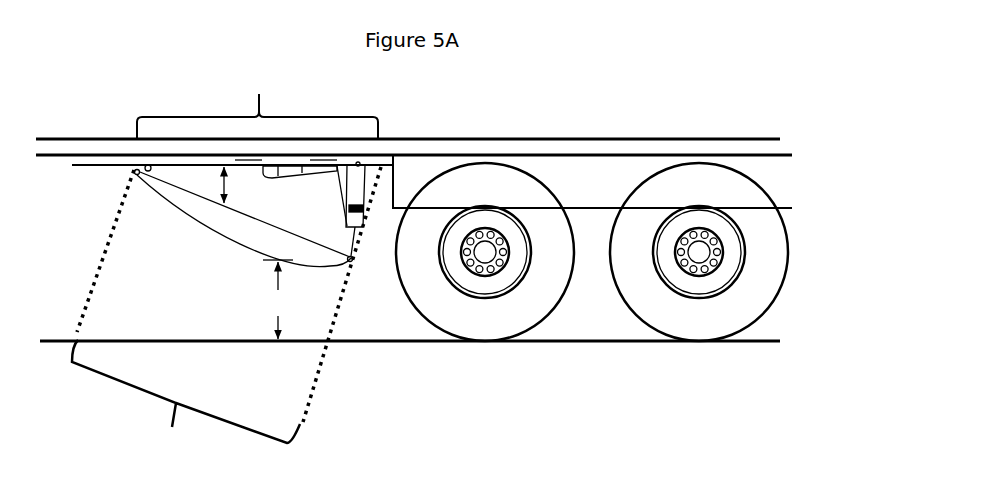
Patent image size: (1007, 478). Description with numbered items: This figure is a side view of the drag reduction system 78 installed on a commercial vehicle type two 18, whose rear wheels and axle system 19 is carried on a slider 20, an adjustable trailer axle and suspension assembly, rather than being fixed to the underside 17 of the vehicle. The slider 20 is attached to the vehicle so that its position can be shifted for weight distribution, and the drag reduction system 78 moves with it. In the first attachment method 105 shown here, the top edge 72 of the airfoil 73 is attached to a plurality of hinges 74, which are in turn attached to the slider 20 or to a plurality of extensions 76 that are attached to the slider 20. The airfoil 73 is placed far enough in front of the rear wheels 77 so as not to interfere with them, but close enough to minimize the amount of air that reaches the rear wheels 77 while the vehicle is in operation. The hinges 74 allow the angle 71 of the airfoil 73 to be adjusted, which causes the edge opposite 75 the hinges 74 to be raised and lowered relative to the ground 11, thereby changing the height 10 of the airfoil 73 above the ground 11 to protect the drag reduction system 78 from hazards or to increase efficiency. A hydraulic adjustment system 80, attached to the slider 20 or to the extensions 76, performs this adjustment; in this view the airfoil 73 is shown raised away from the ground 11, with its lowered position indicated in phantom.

The height 10 is at (278, 299).
The ground 11 is at (205, 340).
The underside 17 is at (57, 158).
The commercial vehicle type two 18 is at (566, 137).
The rear wheels and axle system 19 is at (698, 256).
The slider 20 is at (592, 181).
The angle 71 is at (239, 185).
The top edge 72 is at (137, 178).
The airfoil 73 is at (244, 219).
The hinges 74 is at (147, 162).
The edge opposite 75 is at (354, 264).
The extensions 76 is at (235, 159).
The rear wheels 77 is at (666, 314).
The drag reduction system 78 is at (226, 309).
The hydraulic adjustment system 80 is at (314, 208).
The first attachment method 105 is at (257, 105).